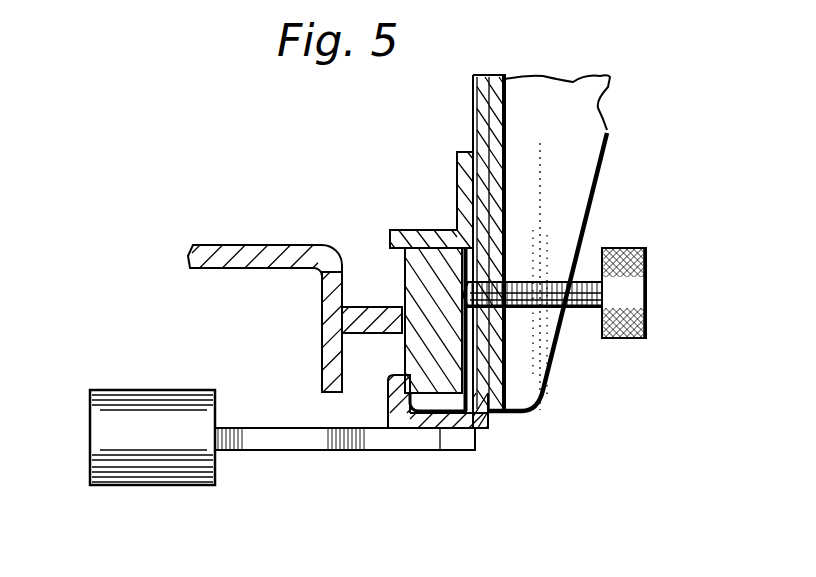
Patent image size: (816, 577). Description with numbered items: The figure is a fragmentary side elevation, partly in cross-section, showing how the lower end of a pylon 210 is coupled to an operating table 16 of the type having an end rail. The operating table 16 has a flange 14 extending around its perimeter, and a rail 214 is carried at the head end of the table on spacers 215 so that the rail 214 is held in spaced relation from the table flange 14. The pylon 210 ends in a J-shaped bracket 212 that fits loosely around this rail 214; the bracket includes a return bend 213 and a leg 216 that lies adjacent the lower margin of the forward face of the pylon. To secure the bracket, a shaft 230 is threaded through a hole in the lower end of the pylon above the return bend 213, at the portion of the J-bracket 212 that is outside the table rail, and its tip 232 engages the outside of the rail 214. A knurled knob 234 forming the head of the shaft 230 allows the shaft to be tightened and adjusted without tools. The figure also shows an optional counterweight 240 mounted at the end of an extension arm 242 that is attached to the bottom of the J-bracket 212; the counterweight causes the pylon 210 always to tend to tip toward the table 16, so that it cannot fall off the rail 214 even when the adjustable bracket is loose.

The table flange 14 is at (323, 333).
The operating table 16 is at (247, 243).
The pylon 210 is at (582, 112).
The J-shaped bracket 212 is at (488, 418).
The return bend 213 is at (440, 451).
The rail 214 is at (402, 287).
The spacers 215 is at (363, 306).
The leg 216 is at (388, 411).
The shaft 230 is at (556, 284).
The tip 232 is at (442, 293).
The knurled knob 234 is at (646, 293).
The counterweight 240 is at (163, 486).
The extension arm 242 is at (313, 452).